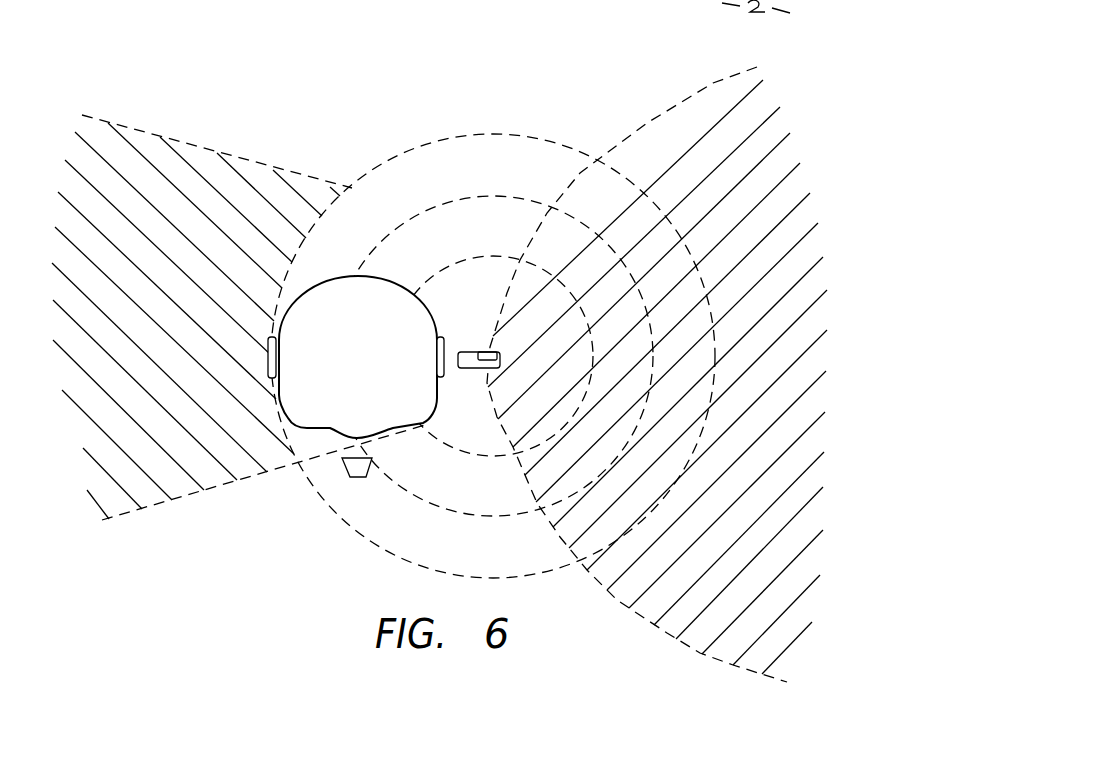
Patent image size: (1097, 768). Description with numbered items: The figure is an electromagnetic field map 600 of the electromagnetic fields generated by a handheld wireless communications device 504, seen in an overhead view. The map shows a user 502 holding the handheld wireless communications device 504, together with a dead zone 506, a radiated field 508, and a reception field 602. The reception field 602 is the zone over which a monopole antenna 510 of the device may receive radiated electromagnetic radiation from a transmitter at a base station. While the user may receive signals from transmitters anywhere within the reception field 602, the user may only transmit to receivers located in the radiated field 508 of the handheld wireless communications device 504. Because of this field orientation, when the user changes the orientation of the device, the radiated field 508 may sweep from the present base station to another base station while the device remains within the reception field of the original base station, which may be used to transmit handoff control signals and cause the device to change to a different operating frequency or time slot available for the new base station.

The user 502 is at (375, 375).
The handheld wireless communications device 504 is at (479, 369).
The monopole antenna 510 is at (486, 352).
The dead zone 506 is at (209, 157).
The radiated field 508 is at (658, 630).
The electromagnetic field map 600 is at (506, 110).
The reception field 602 is at (460, 137).